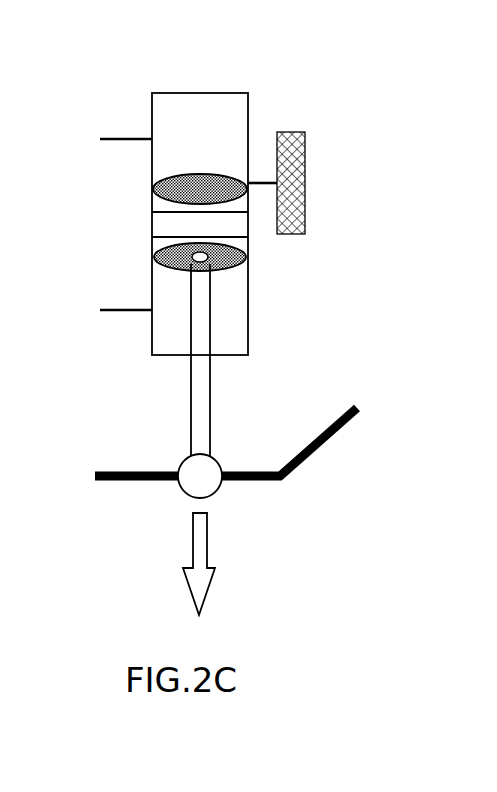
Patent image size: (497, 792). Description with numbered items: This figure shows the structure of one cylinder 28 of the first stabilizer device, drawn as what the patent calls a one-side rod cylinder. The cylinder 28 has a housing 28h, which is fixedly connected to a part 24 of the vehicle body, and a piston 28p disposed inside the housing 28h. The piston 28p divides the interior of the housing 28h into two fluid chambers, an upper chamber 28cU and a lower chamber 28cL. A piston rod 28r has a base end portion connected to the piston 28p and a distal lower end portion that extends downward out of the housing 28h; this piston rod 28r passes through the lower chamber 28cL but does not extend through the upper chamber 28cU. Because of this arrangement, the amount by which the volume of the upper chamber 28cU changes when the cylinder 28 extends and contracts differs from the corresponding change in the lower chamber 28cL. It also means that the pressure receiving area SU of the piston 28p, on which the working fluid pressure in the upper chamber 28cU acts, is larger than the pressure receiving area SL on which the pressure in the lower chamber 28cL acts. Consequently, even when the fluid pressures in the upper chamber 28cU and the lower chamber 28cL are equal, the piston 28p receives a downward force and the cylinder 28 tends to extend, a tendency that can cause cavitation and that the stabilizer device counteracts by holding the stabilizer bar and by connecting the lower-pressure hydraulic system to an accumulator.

The cylinder 28 is at (303, 50).
The housing 28h is at (151, 158).
The upper chamber 28cU is at (232, 140).
The lower chamber 28cL is at (241, 312).
The pressure receiving area SU is at (236, 182).
The pressure receiving area SL is at (246, 252).
The piston 28p is at (157, 227).
The piston rod 28r is at (196, 397).
The part of the vehicle body 24 is at (305, 210).